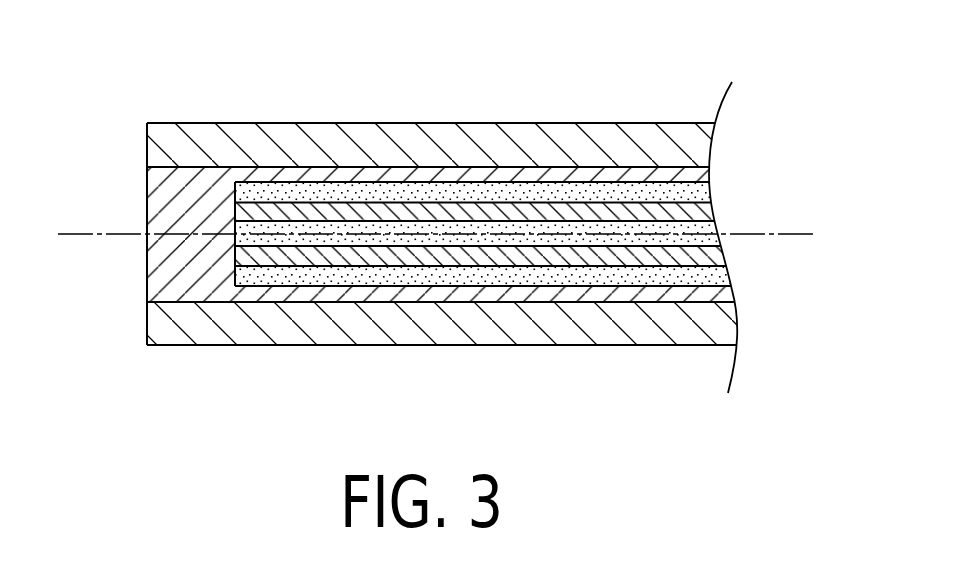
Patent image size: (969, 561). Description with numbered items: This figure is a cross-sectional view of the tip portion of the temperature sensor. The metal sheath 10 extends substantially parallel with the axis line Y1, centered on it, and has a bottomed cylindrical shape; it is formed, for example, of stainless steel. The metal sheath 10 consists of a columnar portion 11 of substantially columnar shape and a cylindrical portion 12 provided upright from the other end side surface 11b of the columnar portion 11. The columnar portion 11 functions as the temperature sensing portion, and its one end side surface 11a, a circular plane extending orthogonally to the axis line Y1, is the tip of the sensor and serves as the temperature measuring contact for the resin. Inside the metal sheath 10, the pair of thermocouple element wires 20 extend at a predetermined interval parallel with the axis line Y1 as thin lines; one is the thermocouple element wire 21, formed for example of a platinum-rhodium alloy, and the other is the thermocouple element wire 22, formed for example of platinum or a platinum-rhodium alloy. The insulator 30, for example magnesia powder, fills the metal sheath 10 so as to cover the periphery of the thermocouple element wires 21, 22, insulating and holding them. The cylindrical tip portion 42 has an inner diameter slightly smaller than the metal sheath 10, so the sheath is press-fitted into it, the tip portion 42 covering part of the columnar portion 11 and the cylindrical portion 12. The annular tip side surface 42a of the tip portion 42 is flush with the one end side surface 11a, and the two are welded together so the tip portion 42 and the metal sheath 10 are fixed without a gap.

The metal sheath 10 is at (535, 304).
The columnar portion 11 is at (190, 222).
The one end side surface 11a is at (147, 283).
The other end side surface 11b is at (237, 227).
The cylindrical portion 12 is at (422, 174).
The pair of thermocouple element wires 20 is at (490, 238).
The thermocouple element wire 21 is at (317, 211).
The thermocouple element wire 22 is at (338, 256).
The insulator 30 is at (500, 189).
The tip portion 42 is at (605, 139).
The tip side surface 42a is at (147, 142).
The axis line Y1 is at (805, 233).